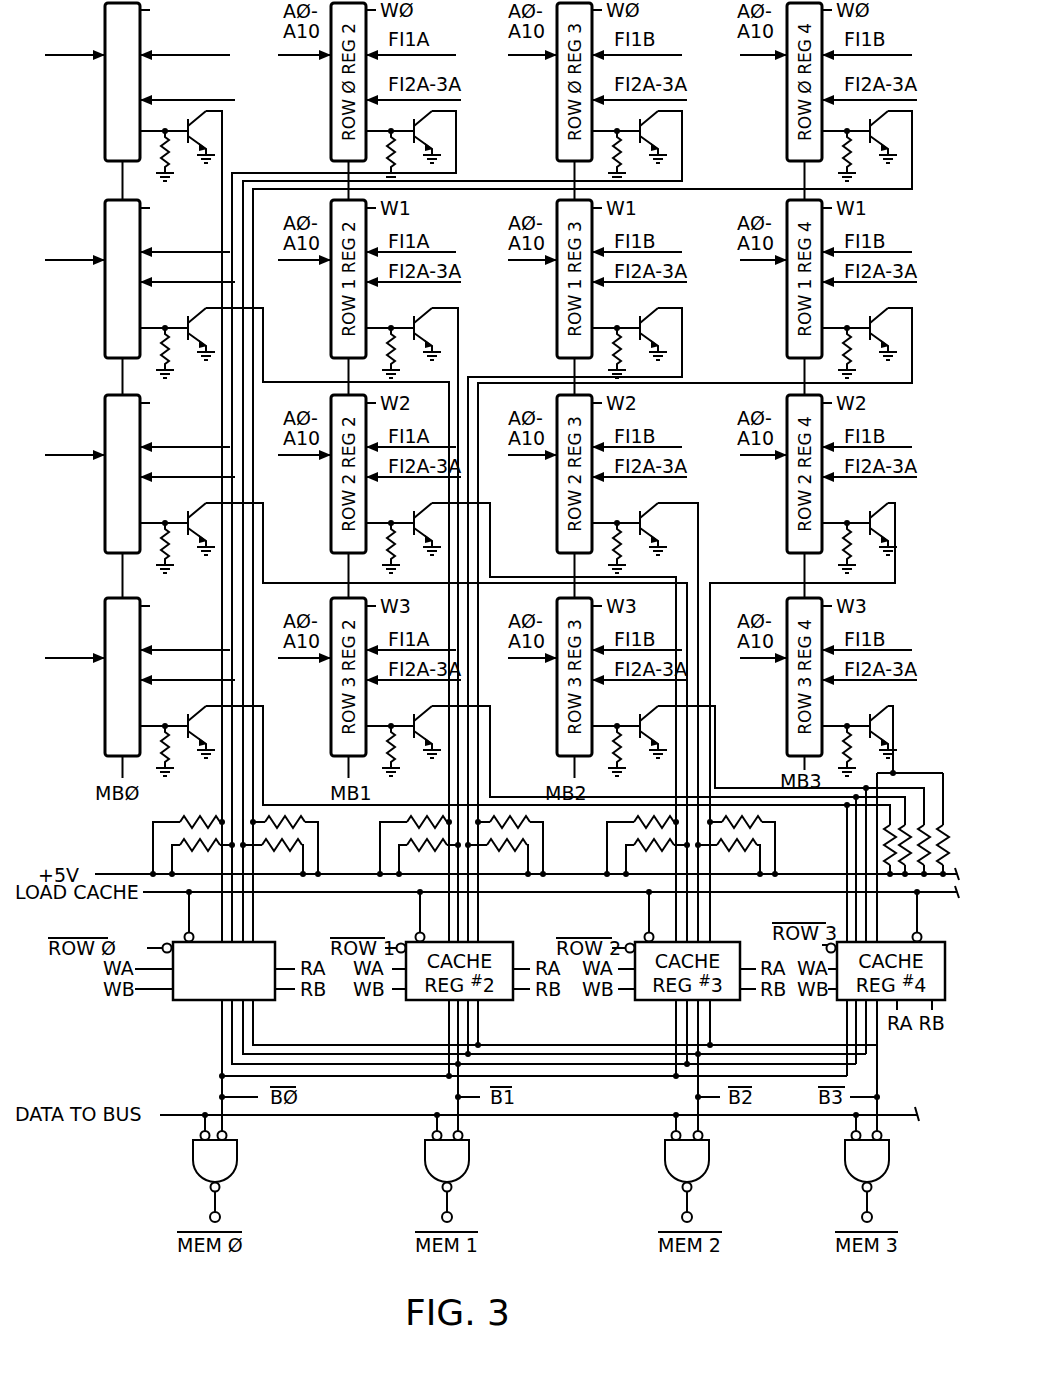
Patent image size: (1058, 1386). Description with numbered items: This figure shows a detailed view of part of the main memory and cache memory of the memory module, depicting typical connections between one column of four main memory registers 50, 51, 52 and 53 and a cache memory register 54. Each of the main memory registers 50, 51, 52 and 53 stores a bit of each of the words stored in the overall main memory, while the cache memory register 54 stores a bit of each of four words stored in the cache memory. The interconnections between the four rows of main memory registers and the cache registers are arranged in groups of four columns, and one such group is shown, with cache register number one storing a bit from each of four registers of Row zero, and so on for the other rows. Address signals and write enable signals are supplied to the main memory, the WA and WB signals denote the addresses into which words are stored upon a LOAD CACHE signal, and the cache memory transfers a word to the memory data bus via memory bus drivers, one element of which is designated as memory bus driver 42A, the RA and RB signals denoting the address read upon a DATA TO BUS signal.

The main memory register 50 is at (105, 131).
The main memory register 51 is at (105, 330).
The main memory register 52 is at (105, 525).
The main memory register 53 is at (105, 718).
The cache memory register 54 is at (271, 942).
The memory bus driver 42A is at (237, 1160).